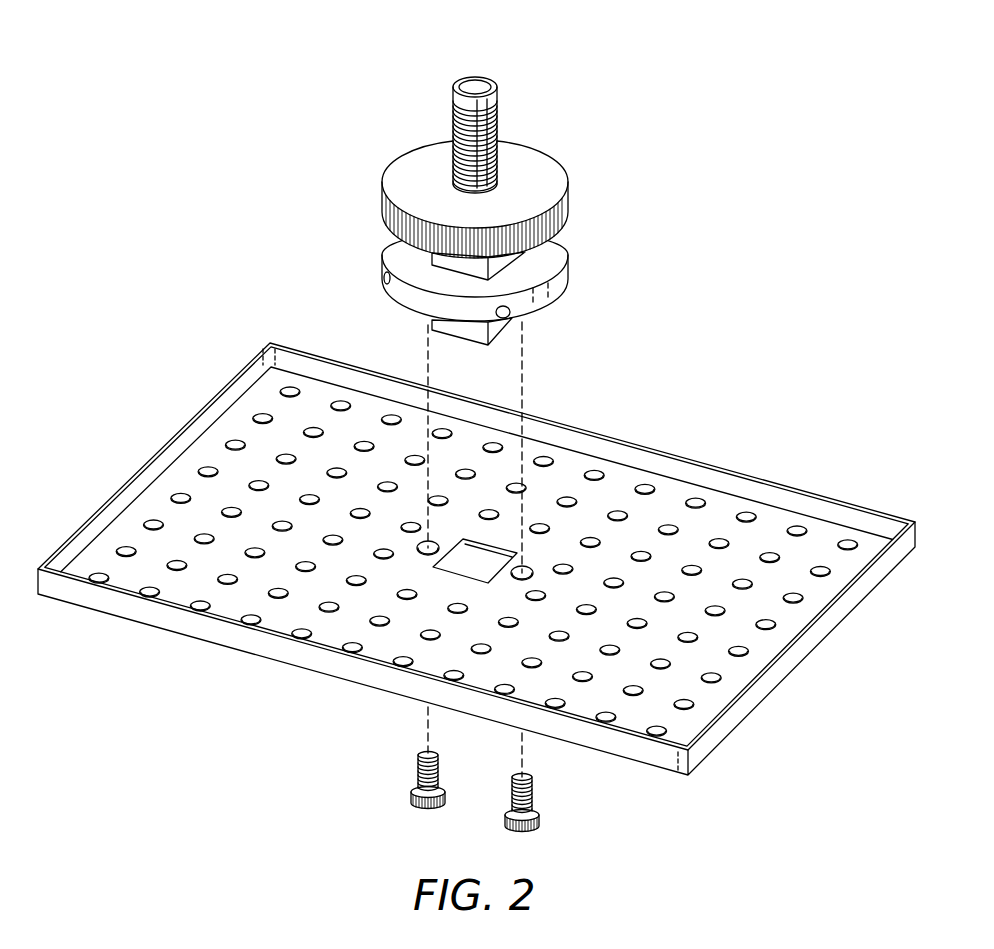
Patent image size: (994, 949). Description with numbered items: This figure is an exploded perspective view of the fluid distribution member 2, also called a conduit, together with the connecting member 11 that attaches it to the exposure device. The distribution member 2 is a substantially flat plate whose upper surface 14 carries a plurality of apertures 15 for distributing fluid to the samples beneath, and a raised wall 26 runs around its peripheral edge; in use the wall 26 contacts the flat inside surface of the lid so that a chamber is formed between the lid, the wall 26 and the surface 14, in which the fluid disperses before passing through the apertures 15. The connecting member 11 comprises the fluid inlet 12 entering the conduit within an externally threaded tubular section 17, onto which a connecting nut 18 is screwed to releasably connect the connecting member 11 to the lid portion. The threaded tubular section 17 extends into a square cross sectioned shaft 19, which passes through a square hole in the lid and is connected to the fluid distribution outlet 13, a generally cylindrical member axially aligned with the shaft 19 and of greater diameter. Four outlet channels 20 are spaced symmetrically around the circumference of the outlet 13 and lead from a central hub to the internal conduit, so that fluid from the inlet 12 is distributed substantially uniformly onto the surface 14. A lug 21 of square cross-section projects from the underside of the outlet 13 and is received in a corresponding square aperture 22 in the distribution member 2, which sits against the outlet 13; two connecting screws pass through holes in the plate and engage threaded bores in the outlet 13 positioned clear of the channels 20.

The fluid distribution member 2 is at (476, 559).
The connecting member 11 is at (457, 239).
The fluid inlet 12 is at (457, 182).
The fluid distribution outlet 13 is at (470, 277).
The surface 14 is at (235, 437).
The apertures 15 is at (245, 620).
The externally threaded tubular section 17 is at (460, 122).
The connecting nut 18 is at (548, 167).
The square cross sectioned shaft 19 is at (438, 260).
The outlet channels 20 is at (385, 280).
The lug 21 is at (430, 325).
The square aperture 22 is at (492, 557).
The raised wall 26 is at (808, 643).